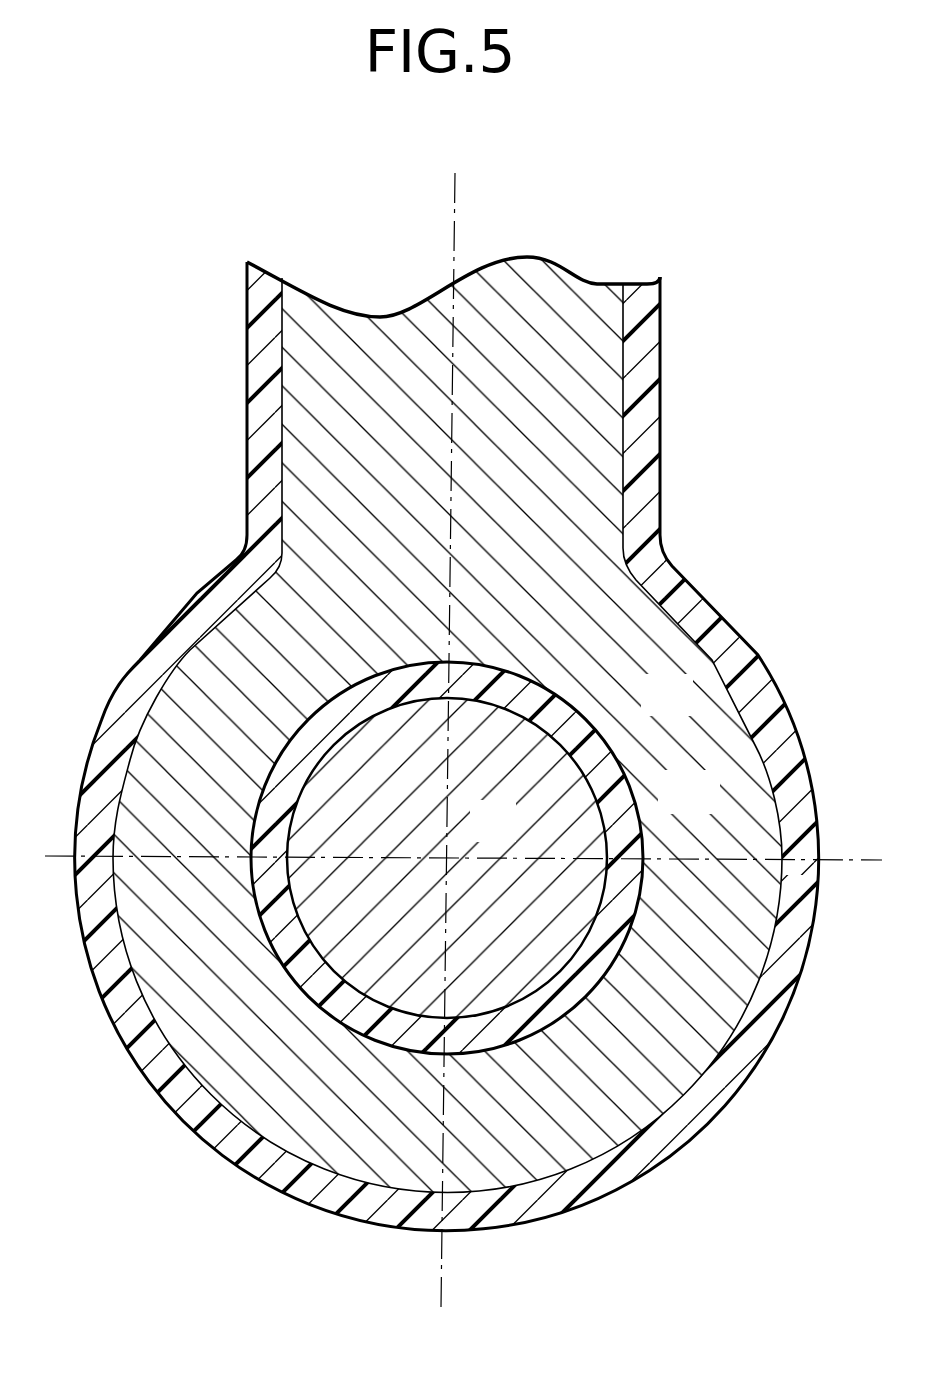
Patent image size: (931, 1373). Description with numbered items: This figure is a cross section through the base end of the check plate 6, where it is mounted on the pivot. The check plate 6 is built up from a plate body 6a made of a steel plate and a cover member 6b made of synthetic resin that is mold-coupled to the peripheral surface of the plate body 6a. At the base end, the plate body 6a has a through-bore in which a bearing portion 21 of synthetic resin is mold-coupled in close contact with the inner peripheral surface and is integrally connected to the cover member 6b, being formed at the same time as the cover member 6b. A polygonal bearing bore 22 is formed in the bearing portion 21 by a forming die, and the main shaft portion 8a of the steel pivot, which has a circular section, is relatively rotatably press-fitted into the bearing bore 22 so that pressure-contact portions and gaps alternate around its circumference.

The check plate 6 is at (447, 676).
The plate body 6a is at (673, 174).
The cover member 6b is at (648, 287).
The bearing portion 21 is at (582, 743).
The bearing bore 22 is at (604, 790).
The main shaft portion 8a is at (510, 839).